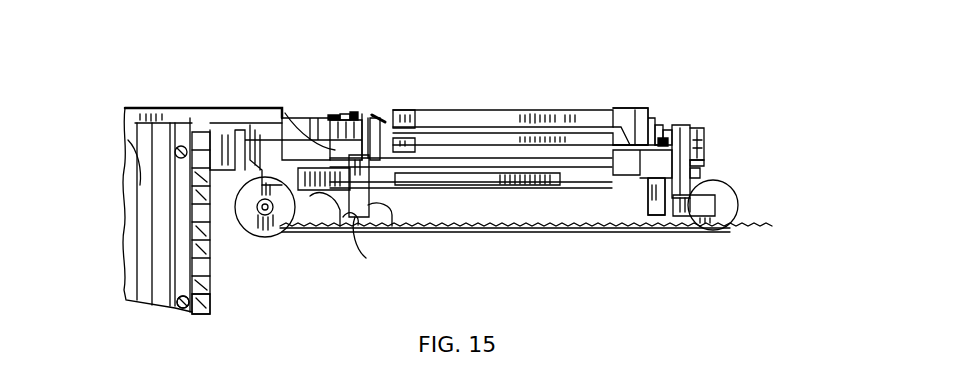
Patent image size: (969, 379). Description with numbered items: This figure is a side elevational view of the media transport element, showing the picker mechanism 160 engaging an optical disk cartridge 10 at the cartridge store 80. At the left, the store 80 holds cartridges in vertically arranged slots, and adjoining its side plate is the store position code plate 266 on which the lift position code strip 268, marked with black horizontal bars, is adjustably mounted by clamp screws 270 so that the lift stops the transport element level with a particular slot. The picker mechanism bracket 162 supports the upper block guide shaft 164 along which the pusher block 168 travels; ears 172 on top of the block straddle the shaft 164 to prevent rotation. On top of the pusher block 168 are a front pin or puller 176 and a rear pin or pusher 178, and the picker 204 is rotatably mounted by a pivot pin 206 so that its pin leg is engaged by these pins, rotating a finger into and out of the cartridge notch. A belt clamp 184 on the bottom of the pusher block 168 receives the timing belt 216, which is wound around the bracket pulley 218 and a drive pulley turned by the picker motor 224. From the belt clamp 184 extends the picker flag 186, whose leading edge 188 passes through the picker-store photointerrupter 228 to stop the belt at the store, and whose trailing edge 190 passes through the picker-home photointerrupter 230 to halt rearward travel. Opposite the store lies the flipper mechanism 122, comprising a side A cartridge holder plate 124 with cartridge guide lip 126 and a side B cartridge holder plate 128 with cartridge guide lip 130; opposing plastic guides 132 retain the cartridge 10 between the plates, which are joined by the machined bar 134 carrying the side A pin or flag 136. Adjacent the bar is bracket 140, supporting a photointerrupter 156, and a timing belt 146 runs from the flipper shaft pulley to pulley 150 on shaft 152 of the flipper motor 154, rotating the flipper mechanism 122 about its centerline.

The optical disk cartridge 10 is at (305, 115).
The cartridge store 80 is at (212, 110).
The flipper mechanism 122 is at (628, 110).
The side "A" cartridge holder plate 124 is at (628, 110).
The cartridge guide lip 126 is at (402, 118).
The side "B" cartridge holder plate 128 is at (620, 138).
The cartridge guide lip 130 is at (405, 142).
The plastic guides 132 is at (513, 115).
The machined bar 134 is at (658, 128).
The side "A" pin or flag 136 is at (663, 138).
The bracket 140 is at (682, 125).
The timing belt 146 is at (697, 130).
The pulley 150 is at (700, 162).
The shaft 152 is at (696, 176).
The flipper motor 154 is at (656, 162).
The photointerrupter 156 is at (667, 132).
The picker mechanism 160 is at (330, 116).
The picker mechanism bracket 162 is at (320, 190).
The upper block guide shaft 164 is at (476, 176).
The pusher block 168 is at (372, 118).
The ears 172 is at (382, 118).
The front pin or puller 176 is at (356, 114).
The rear pin or pusher 178 is at (366, 115).
The belt clamp 184 is at (370, 196).
The picker flag 186 is at (346, 220).
The leading or forward edge 188 is at (338, 206).
The trailing edge 190 is at (390, 214).
The picker 204 is at (298, 128).
The pivot pin 206 is at (344, 114).
The timing belt 216 is at (598, 230).
The bracket pulley 218 is at (728, 210).
The picker motor 224 is at (245, 220).
The picker-store photointerrupter 228 is at (365, 222).
The picker-home photointerrupter 230 is at (656, 218).
The store position code plate 266 is at (145, 150).
The lift position code strip 268 is at (208, 302).
The clamp screws 270 is at (184, 308).